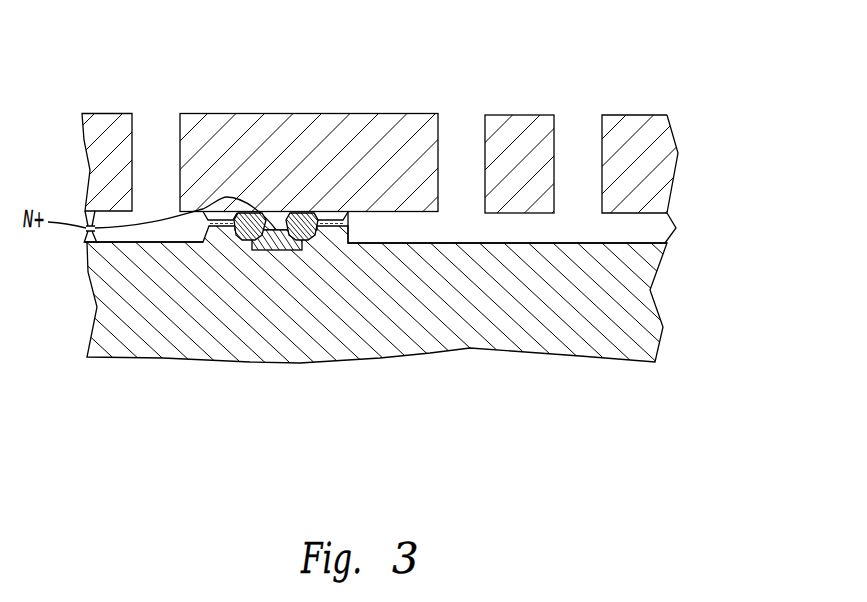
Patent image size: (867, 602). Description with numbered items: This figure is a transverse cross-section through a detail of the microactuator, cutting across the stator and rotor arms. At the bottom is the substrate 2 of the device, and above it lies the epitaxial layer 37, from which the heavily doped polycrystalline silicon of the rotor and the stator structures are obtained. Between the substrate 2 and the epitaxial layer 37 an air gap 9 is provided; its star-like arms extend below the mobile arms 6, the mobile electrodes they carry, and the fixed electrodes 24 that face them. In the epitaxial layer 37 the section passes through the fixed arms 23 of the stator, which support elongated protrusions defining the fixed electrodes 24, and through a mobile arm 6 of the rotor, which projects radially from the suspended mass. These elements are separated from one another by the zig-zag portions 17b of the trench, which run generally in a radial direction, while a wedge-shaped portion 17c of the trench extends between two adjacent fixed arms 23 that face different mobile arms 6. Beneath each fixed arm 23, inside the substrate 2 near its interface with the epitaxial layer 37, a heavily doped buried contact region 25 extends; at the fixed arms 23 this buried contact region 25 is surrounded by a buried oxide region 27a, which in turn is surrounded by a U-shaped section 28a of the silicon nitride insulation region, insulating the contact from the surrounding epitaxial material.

The substrate 2 is at (586, 340).
The air gap 9 is at (502, 232).
The wedge-shaped portions 17c is at (156, 130).
The fixed arms 23 is at (288, 118).
The fixed electrodes 24 is at (413, 118).
The mobile arms 6 is at (535, 133).
The zig-zag portions 17b is at (470, 116).
The epitaxial layer 37 is at (684, 162).
The U-shaped sections 28a is at (222, 224).
The buried oxide regions 27a is at (243, 240).
The buried contact region 25 is at (293, 232).